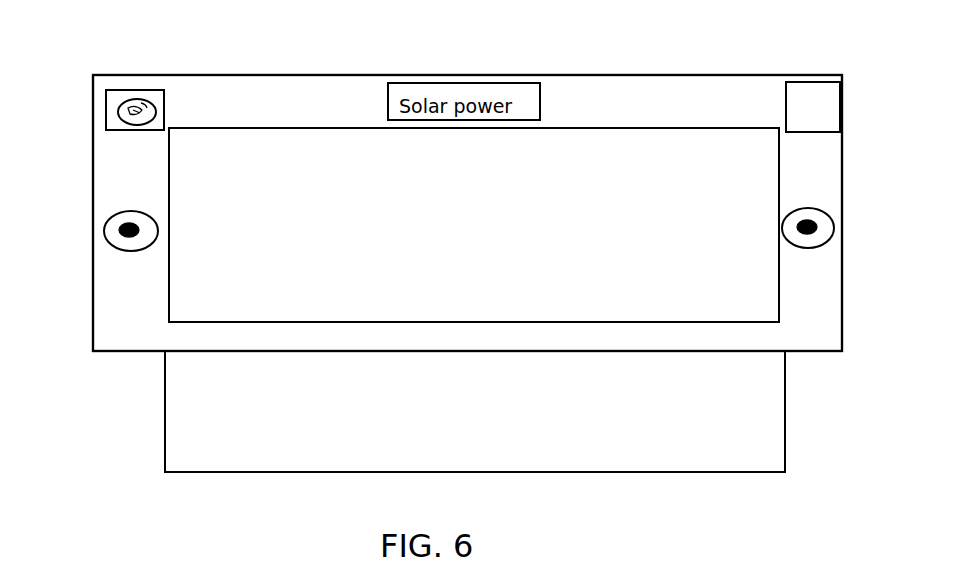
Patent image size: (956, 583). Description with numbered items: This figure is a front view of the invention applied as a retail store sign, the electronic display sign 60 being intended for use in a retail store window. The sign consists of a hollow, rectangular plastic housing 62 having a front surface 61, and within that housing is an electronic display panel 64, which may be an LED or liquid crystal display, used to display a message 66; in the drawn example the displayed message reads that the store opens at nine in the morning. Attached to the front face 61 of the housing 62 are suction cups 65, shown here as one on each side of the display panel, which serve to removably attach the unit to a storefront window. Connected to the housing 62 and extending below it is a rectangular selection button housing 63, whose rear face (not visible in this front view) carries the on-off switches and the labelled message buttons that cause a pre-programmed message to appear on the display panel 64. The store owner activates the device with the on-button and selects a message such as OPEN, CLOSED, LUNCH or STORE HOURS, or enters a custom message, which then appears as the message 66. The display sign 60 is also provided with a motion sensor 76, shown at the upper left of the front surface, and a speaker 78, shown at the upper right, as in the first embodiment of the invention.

The electronic display sign 60 is at (80, 293).
The front surface 61 is at (243, 116).
The housing 62 is at (97, 181).
The selection button housing 63 is at (462, 418).
The electronic display panel 64 is at (168, 303).
The suction cups 65 is at (104, 233).
The message 66 is at (363, 246).
The motion sensor 76 is at (145, 92).
The speaker 78 is at (833, 123).